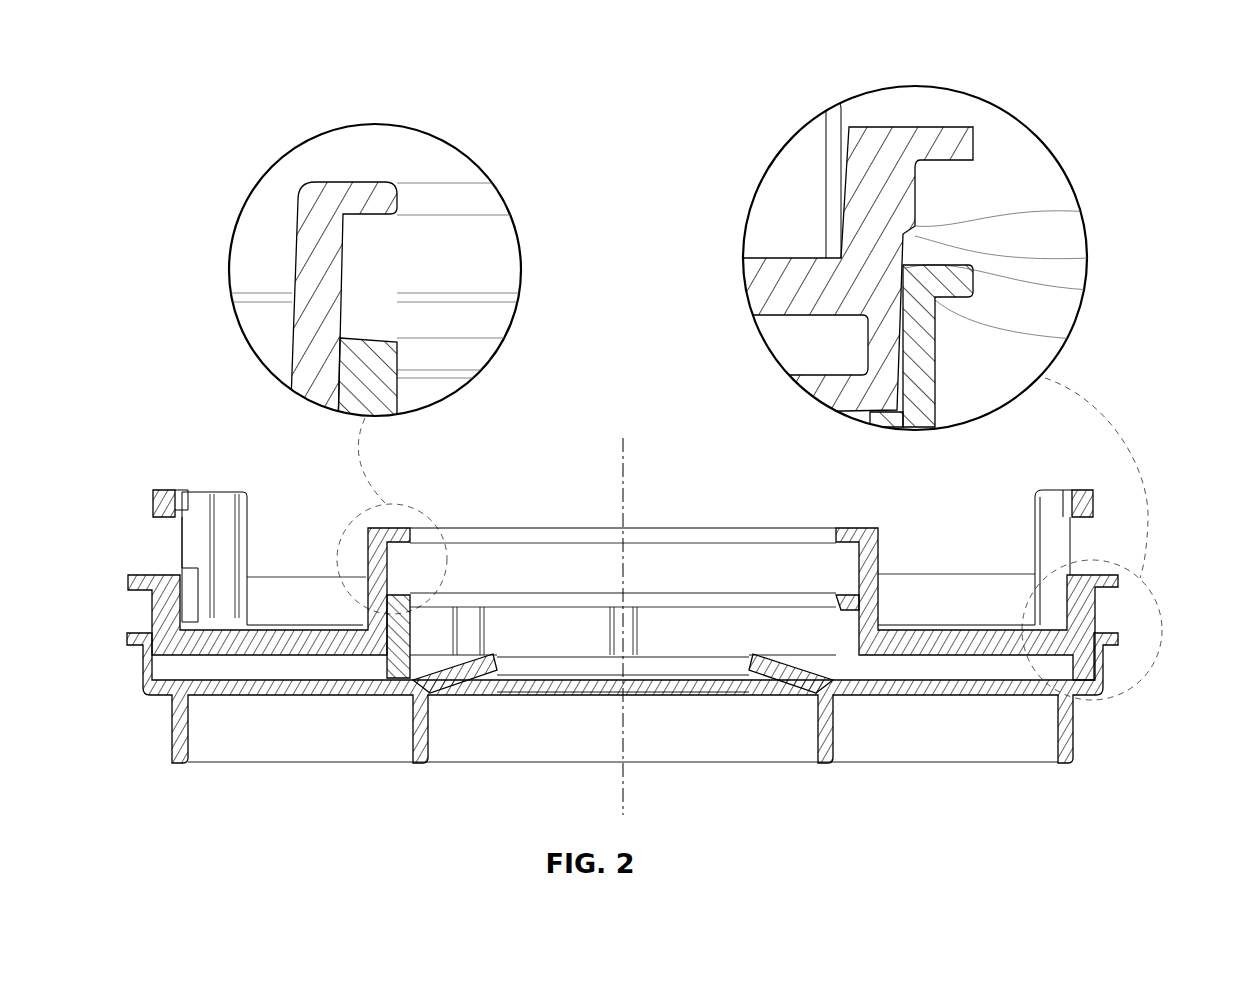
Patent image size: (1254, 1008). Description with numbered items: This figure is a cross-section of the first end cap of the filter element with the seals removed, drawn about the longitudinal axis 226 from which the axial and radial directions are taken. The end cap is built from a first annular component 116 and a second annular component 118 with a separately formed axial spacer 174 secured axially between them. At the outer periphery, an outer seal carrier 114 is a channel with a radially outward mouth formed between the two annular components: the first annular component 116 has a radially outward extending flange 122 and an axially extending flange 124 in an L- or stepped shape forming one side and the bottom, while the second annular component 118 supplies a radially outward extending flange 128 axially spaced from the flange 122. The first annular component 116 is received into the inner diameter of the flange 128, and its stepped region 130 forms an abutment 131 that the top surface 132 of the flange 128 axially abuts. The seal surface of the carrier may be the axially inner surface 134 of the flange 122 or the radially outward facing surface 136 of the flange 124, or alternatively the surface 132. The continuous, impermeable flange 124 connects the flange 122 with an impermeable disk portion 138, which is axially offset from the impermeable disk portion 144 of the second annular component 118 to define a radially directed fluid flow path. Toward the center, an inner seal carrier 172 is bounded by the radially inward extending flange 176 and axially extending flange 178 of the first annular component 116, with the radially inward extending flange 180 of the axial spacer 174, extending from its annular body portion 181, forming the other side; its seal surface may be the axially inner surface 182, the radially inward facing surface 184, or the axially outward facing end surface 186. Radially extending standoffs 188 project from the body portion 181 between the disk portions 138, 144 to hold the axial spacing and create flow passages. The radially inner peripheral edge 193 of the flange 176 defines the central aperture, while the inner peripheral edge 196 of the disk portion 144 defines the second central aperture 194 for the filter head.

The outer seal carrier 114 is at (1010, 235).
The first annular component 116 is at (986, 630).
The second annular component 118 is at (1005, 687).
The radially outward extending flange 122 is at (942, 135).
The axially extending flange 124 is at (902, 197).
The radially outward extending flange 128 is at (963, 283).
The stepped region 130 is at (888, 252).
The abutment 131 is at (940, 338).
The top surface 132 is at (960, 250).
The axially inner surface 134 is at (963, 172).
The radially outward facing surface 136 is at (917, 222).
The impermeable disk portion 138 is at (917, 627).
The impermeable disk portion 144 is at (884, 687).
The inner seal carrier 172 is at (425, 325).
The axial spacer 174 is at (443, 637).
The radially inward extending flange 176 is at (363, 195).
The axially extending flange 178 is at (302, 256).
The radially inward extending flange 180 is at (752, 600).
The annular body portion 181 is at (680, 637).
The axially inner surface 182 is at (400, 242).
The radially inward facing surface 184 is at (345, 268).
The axially outward facing end surface 186 is at (387, 340).
The radially extending standoffs 188 is at (368, 681).
The radially inner peripheral edge 193 is at (590, 538).
The second central aperture 194 is at (652, 700).
The inner peripheral edge 196 is at (500, 667).
The longitudinal axis 226 is at (626, 448).